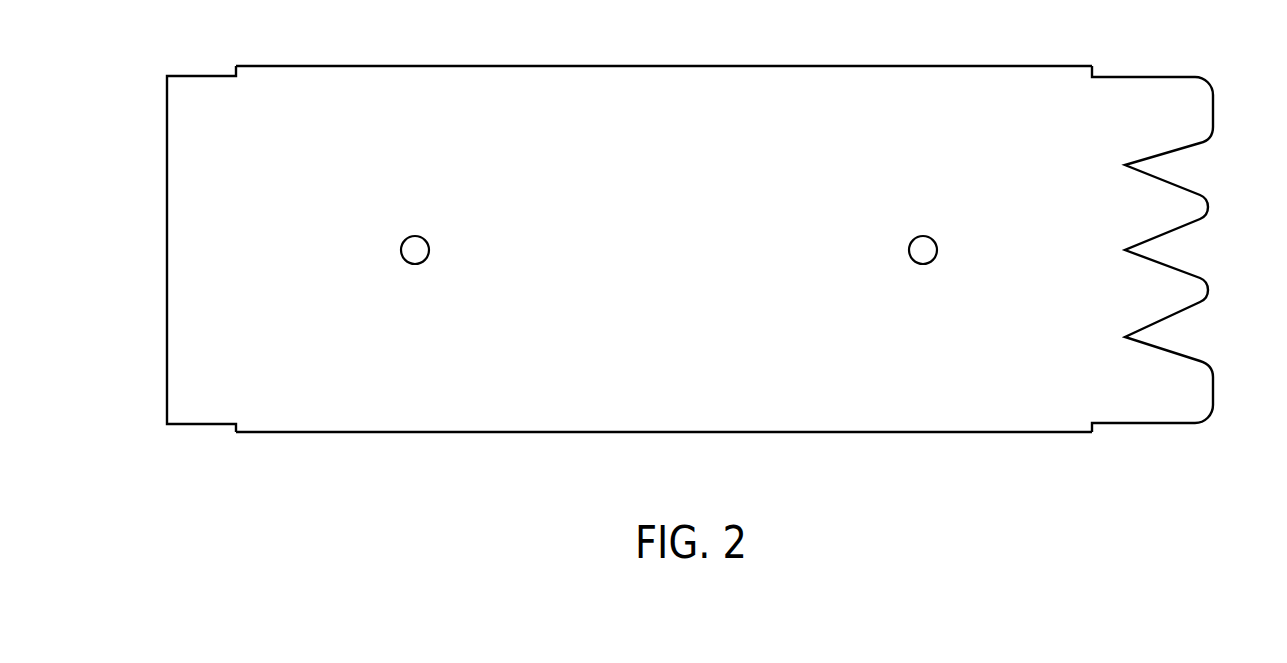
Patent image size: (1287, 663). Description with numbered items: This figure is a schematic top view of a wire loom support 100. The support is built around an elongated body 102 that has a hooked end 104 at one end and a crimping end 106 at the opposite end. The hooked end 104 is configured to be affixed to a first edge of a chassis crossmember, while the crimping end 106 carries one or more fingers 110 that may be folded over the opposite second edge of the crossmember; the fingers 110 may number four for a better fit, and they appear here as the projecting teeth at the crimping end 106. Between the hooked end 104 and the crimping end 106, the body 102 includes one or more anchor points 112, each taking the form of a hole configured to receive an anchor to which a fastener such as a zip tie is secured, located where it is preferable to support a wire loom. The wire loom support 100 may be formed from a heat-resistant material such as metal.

The wire loom support 100 is at (687, 291).
The body 102 is at (600, 90).
The hooked end 104 is at (167, 168).
The crimping end 106 is at (1143, 424).
The fingers 110 is at (1213, 208).
The anchor points 112 is at (921, 237).